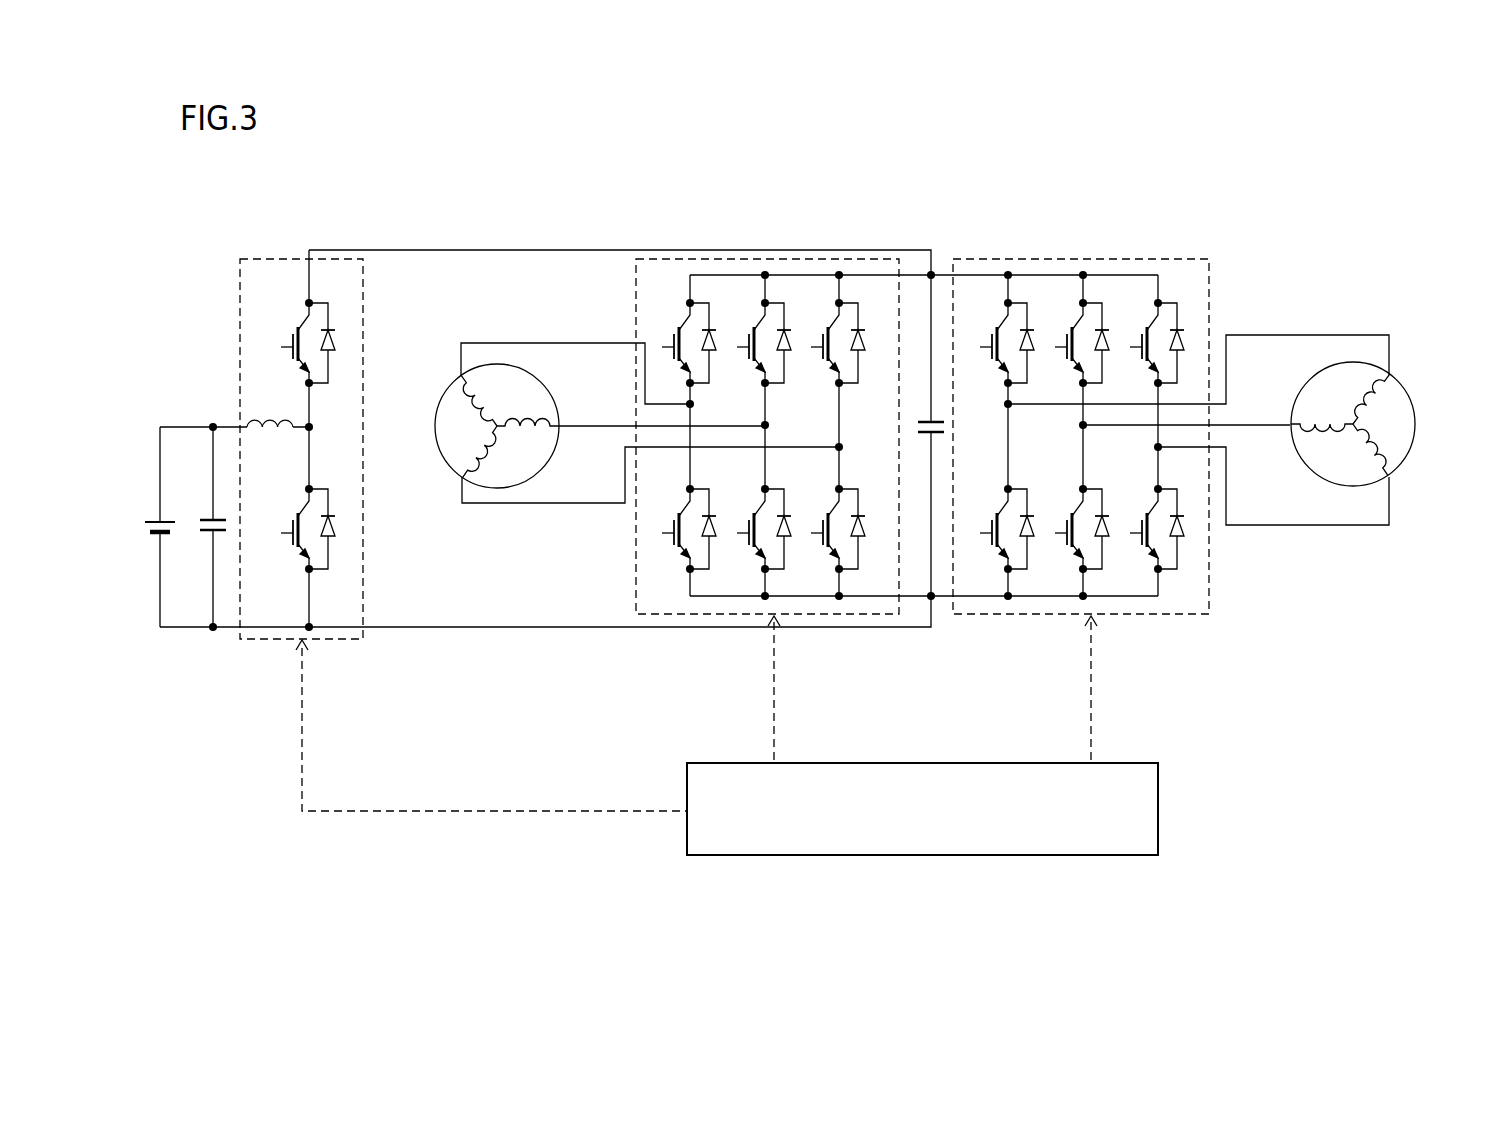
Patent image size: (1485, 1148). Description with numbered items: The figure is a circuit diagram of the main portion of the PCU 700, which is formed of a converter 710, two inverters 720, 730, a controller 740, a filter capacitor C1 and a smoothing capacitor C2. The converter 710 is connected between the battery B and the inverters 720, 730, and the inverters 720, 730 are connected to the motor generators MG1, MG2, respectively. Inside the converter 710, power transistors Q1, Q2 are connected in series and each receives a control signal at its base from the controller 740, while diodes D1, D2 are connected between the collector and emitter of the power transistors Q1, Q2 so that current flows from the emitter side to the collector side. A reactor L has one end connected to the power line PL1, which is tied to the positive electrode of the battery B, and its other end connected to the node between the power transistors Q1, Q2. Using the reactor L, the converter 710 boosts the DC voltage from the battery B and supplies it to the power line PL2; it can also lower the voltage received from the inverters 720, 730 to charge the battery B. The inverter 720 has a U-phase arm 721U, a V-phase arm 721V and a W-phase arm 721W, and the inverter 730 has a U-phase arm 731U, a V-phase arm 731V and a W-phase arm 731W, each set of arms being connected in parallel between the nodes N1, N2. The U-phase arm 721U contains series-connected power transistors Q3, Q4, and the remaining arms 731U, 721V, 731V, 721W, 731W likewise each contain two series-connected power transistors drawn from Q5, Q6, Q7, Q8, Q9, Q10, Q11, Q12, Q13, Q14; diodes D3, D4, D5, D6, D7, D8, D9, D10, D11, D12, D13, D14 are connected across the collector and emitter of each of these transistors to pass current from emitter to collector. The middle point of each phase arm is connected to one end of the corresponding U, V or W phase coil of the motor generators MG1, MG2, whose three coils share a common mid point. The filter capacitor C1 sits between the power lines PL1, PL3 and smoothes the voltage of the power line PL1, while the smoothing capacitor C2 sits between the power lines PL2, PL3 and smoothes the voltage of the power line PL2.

The PCU 700 is at (900, 190).
The converter 710 is at (301, 419).
The inverter 720 is at (1070, 406).
The inverter 730 is at (783, 406).
The controller 740 is at (920, 763).
The power line PL1 is at (175, 425).
The power line PL2 is at (527, 248).
The power line PL3 is at (540, 632).
The battery B is at (150, 518).
The filter capacitor C1 is at (208, 518).
The smoothing capacitor C2 is at (925, 418).
The reactor L is at (262, 420).
The node N1 is at (932, 272).
The node N2 is at (935, 600).
The motor generator MG1 is at (1400, 385).
The motor generator MG2 is at (450, 385).
The power transistor Q1 is at (292, 343).
The power transistor Q2 is at (292, 529).
The power transistor Q3 is at (991, 343).
The power transistor Q4 is at (991, 529).
The power transistor Q5 is at (1066, 343).
The power transistor Q6 is at (1066, 529).
The power transistor Q7 is at (1141, 343).
The power transistor Q8 is at (1141, 529).
The power transistor Q9 is at (672, 343).
The power transistor Q10 is at (674, 529).
The power transistor Q11 is at (742, 343).
The power transistor Q12 is at (742, 529).
The power transistor Q13 is at (817, 343).
The power transistor Q14 is at (817, 529).
The diode D1 is at (334, 343).
The diode D2 is at (334, 529).
The diode D3 is at (1032, 343).
The diode D4 is at (1032, 529).
The diode D5 is at (1107, 343).
The diode D6 is at (1107, 529).
The diode D7 is at (1182, 343).
The diode D8 is at (1182, 529).
The diode D9 is at (714, 343).
The diode D10 is at (720, 529).
The diode D11 is at (795, 343).
The diode D12 is at (795, 529).
The diode D13 is at (870, 343).
The diode D14 is at (870, 529).
The U-phase arm 721U is at (997, 418).
The V-phase arm 721V is at (1075, 438).
The W-phase arm 721W is at (1148, 460).
The U-phase arm 731U is at (738, 418).
The V-phase arm 731V is at (813, 438).
The W-phase arm 731W is at (888, 460).